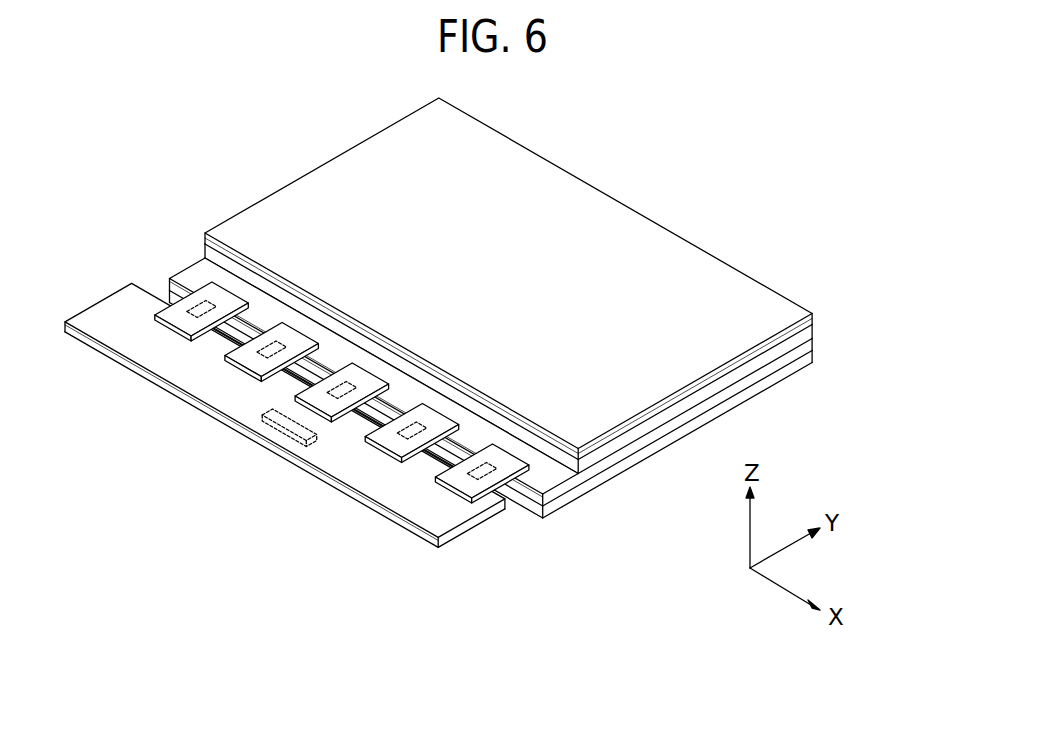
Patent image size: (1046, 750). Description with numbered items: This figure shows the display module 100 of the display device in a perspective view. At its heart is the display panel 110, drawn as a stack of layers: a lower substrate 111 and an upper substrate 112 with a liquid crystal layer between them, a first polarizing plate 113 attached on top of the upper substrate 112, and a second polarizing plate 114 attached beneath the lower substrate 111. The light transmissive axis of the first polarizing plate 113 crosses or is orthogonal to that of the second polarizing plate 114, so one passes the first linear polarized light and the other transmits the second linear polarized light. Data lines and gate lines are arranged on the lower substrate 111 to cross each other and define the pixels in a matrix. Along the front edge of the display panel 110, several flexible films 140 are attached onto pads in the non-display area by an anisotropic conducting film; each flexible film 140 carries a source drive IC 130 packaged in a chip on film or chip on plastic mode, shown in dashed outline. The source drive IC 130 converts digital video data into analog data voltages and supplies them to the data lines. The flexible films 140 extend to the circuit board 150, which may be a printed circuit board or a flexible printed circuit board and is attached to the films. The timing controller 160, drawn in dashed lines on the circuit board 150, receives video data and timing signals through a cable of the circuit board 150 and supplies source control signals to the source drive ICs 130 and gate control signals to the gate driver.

The display device 100 is at (500, 345).
The display panel 110 is at (552, 308).
The lower substrate 111 is at (816, 347).
The upper substrate 112 is at (816, 333).
The first polarizing plate 113 is at (816, 319).
The second polarizing plate 114 is at (884, 294).
The source drive integrated circuit 130 is at (483, 476).
The flexible film 140 is at (455, 480).
The circuit board 150 is at (395, 495).
The timing controller 160 is at (292, 434).